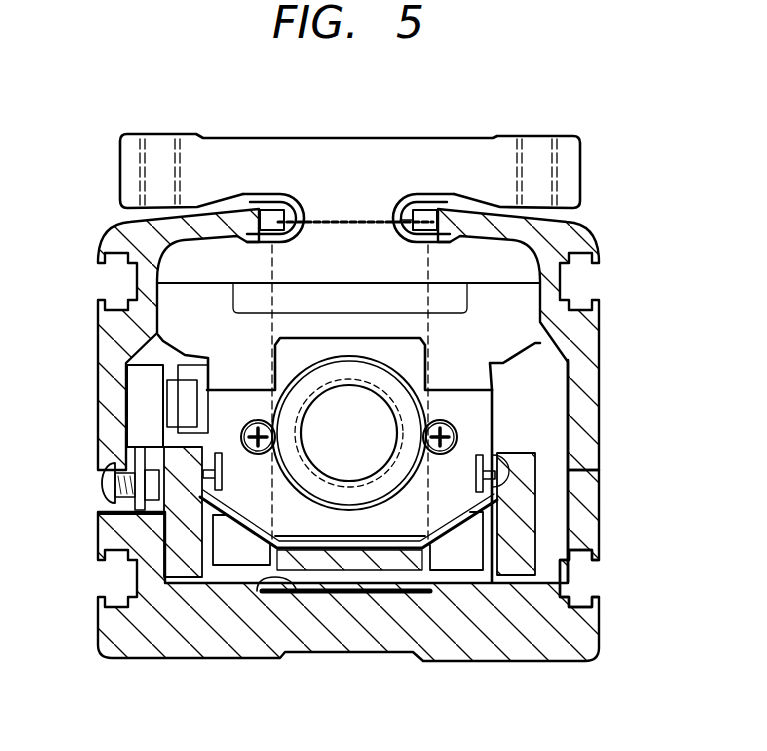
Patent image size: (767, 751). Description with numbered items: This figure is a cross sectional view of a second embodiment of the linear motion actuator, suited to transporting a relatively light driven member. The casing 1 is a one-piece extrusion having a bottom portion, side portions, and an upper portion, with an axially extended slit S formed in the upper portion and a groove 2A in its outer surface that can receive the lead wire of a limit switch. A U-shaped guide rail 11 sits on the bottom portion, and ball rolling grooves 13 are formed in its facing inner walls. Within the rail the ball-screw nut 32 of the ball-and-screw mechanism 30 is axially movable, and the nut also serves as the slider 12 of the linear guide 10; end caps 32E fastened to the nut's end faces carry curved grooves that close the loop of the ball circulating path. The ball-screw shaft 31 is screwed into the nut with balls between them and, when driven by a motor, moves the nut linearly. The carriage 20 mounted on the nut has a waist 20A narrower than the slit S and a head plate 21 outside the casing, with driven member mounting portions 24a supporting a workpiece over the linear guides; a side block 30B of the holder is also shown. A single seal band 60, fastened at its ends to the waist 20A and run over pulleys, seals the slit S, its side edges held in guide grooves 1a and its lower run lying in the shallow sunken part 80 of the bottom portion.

The casing 1 is at (461, 638).
The guide grooves 1a is at (275, 212).
The groove 2A is at (583, 598).
The linear guide 10 is at (82, 507).
The guide rail 11 is at (160, 545).
The slider 12 is at (150, 513).
The ball rolling grooves 13 is at (455, 520).
The carriage 20 is at (185, 325).
The waist 20A is at (272, 207).
The head plate 21 is at (125, 163).
The driven member mounting portions 24a is at (130, 133).
The ball-and-screw mechanism 30 is at (660, 367).
The holder side block 30B is at (127, 427).
The ball-screw shaft 31 is at (380, 457).
The ball-screw nut 32 is at (478, 409).
The end caps 32E is at (520, 538).
The seal band 60 is at (370, 220).
The sunken part 80 is at (287, 596).
The slit S is at (405, 219).